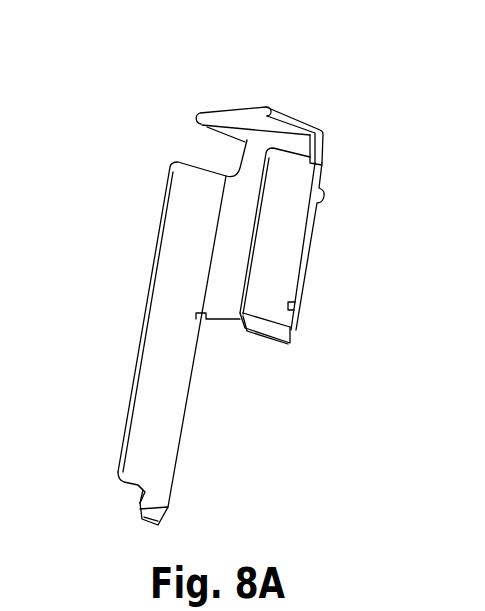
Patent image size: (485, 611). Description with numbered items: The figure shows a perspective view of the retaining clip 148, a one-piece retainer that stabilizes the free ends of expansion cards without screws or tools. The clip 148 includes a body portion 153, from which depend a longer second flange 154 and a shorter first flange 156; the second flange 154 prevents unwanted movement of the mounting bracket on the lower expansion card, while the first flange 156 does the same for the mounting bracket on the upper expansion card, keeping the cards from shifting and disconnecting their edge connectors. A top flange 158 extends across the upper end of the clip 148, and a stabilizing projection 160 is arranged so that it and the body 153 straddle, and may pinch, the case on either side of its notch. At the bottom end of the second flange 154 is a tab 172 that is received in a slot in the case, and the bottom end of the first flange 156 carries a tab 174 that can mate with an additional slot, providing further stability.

The retaining clip 148 is at (128, 79).
The body portion 153 is at (220, 300).
The second flange 154 is at (160, 347).
The first flange 156 is at (283, 247).
The top flange 158 is at (241, 116).
The stabilizing projection 160 is at (323, 148).
The tab 172 is at (153, 512).
The tab 174 is at (282, 329).